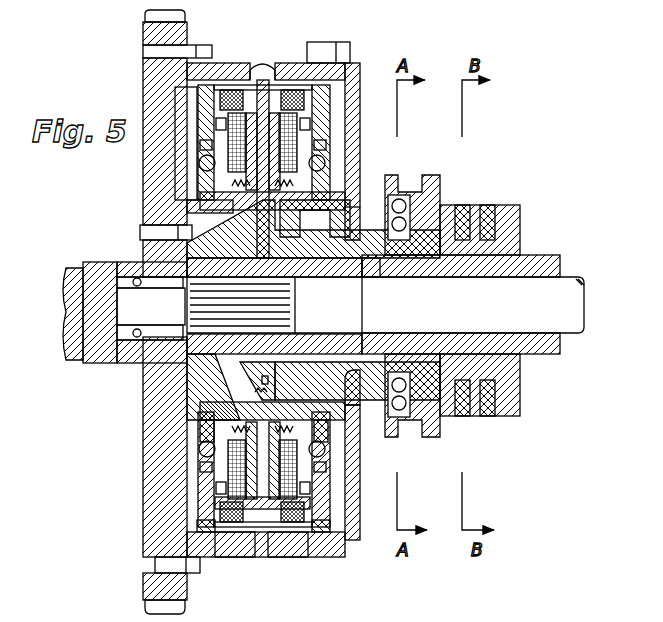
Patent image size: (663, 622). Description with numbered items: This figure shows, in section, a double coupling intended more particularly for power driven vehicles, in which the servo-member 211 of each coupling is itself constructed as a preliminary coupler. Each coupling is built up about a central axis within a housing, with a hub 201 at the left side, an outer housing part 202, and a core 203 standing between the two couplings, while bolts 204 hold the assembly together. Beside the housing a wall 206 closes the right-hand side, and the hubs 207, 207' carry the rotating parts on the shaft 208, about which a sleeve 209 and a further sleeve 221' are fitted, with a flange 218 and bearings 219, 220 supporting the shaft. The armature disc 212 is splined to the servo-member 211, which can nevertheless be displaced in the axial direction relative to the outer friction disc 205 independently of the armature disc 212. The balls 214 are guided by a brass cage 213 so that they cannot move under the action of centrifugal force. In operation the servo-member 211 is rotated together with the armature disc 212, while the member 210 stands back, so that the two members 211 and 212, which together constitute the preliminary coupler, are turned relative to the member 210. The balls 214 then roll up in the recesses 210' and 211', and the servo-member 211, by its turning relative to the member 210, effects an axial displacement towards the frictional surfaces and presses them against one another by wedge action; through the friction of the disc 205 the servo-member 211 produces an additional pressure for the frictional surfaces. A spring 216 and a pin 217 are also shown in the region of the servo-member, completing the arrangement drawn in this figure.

The input flange hub 201 is at (76, 360).
The housing 202 is at (150, 74).
The magnetic core 203 is at (262, 84).
The bolts 204 is at (228, 557).
The outer friction disc 205 is at (202, 501).
The housing end wall 206 is at (347, 180).
The hub 207 is at (313, 238).
The hub 207' is at (313, 366).
The shaft 208 is at (552, 326).
The sleeve 209 is at (522, 258).
The member 210 is at (250, 464).
The recesses 210' is at (297, 147).
The servo-member 211 is at (262, 381).
The recesses 211' is at (315, 218).
The armature disc 212 is at (200, 526).
The brass cage 213 is at (200, 441).
The balls 214 is at (199, 165).
The spring 216 is at (253, 392).
The pin 217 is at (254, 378).
The flange 218 is at (430, 186).
The bearing 219 is at (412, 208).
The bearing 220 is at (410, 402).
The sleeve 221' is at (402, 278).